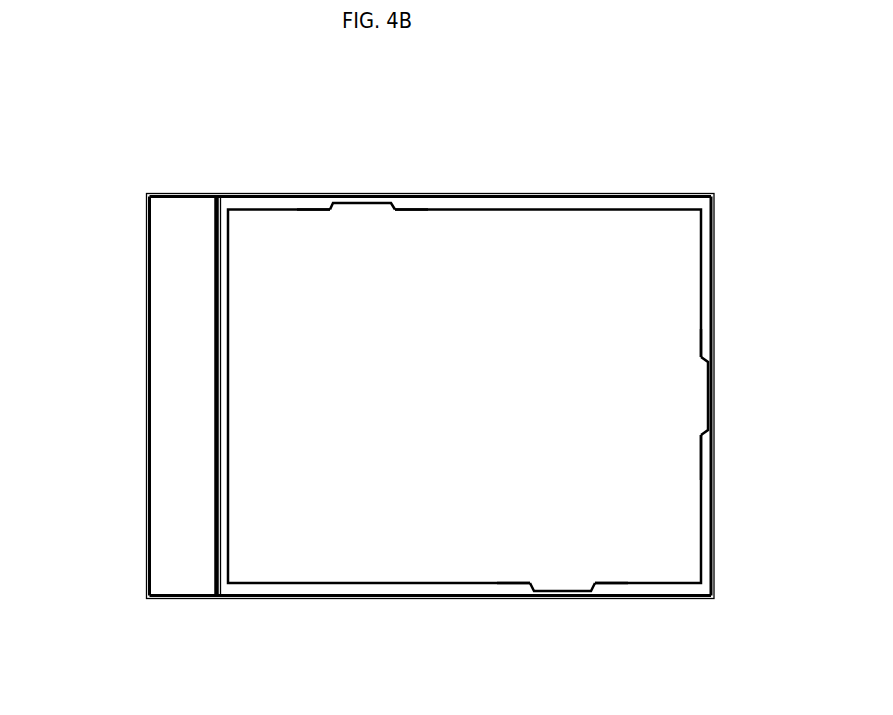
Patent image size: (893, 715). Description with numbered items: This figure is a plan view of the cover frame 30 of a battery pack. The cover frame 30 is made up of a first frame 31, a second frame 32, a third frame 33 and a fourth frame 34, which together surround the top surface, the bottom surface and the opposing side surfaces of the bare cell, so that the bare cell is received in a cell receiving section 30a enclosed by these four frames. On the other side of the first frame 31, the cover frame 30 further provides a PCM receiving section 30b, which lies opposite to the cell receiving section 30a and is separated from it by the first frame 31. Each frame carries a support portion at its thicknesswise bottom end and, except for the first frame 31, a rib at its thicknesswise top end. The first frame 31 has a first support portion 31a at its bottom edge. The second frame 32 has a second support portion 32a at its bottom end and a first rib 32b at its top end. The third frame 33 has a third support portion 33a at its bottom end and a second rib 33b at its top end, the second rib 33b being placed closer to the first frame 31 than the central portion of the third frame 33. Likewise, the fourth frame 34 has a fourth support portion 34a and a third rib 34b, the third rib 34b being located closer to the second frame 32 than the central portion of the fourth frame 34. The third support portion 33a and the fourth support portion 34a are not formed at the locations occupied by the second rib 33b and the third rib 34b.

The cover frame 30 is at (207, 131).
The cell receiving section 30a is at (335, 497).
The PCM receiving section 30b is at (178, 528).
The first frame 31 is at (213, 442).
The first support portion 31a is at (223, 373).
The second frame 32 is at (717, 277).
The second support portion 32a is at (705, 329).
The first rib 32b is at (710, 404).
The third frame 33 is at (470, 196).
The third support portion 33a is at (427, 208).
The second rib 33b is at (360, 201).
The fourth frame 34 is at (472, 598).
The fourth support portion 34a is at (625, 586).
The third rib 34b is at (560, 593).